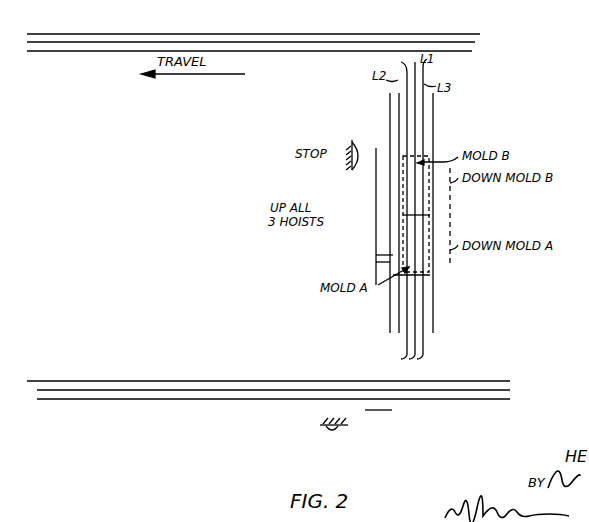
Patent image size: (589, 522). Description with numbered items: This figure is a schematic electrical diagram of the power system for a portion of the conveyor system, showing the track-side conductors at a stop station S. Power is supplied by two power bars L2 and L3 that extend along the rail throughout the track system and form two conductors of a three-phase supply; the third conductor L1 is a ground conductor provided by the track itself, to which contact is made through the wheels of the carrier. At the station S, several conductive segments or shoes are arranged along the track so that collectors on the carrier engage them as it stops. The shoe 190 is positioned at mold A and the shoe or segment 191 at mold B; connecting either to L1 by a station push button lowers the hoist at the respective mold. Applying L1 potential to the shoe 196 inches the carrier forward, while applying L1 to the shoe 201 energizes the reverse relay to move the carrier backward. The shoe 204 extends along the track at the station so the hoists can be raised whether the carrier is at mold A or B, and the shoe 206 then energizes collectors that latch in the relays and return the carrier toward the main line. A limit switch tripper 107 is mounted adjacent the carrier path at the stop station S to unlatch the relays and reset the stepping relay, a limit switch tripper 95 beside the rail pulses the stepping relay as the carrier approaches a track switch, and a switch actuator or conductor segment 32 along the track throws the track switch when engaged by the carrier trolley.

The ground conductor L1 is at (475, 42).
The power bar L2 is at (472, 51).
The power bar L3 is at (480, 34).
The limit switch tripper 107 is at (358, 142).
The shoe 204 is at (376, 182).
The stop station S is at (361, 222).
The conductive segment or shoe 206 is at (376, 262).
The shoe or segment 191 is at (452, 192).
The shoe 190 is at (452, 258).
The conductive segment or shoe 196 is at (395, 312).
The conductive segment or shoe 201 is at (436, 312).
The limit switch tripper 95 is at (336, 428).
The switch actuator or conductor segment 32 is at (392, 410).